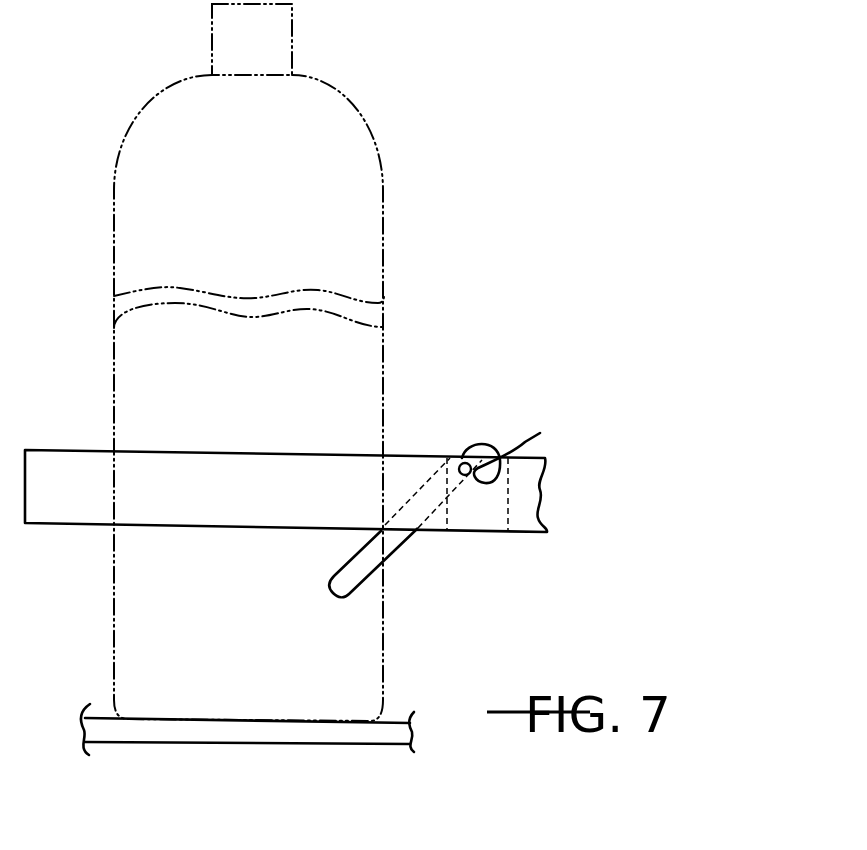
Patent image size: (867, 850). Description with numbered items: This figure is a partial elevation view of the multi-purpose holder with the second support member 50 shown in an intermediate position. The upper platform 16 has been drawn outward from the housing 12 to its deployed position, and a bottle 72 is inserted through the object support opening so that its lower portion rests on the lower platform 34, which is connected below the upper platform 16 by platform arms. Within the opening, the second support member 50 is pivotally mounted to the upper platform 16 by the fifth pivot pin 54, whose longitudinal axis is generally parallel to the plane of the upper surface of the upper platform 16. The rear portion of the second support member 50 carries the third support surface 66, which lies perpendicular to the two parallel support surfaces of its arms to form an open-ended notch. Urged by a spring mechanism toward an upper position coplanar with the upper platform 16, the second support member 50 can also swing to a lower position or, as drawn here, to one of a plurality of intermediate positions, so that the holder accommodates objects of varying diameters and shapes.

The housing 12 is at (634, 0).
The upper platform 16 is at (85, 444).
The lower platform 34 is at (391, 708).
The second support member 50 is at (471, 445).
The fifth pivot pin 54 is at (540, 433).
The third support surface 66 is at (407, 522).
The bottle 72 is at (388, 207).